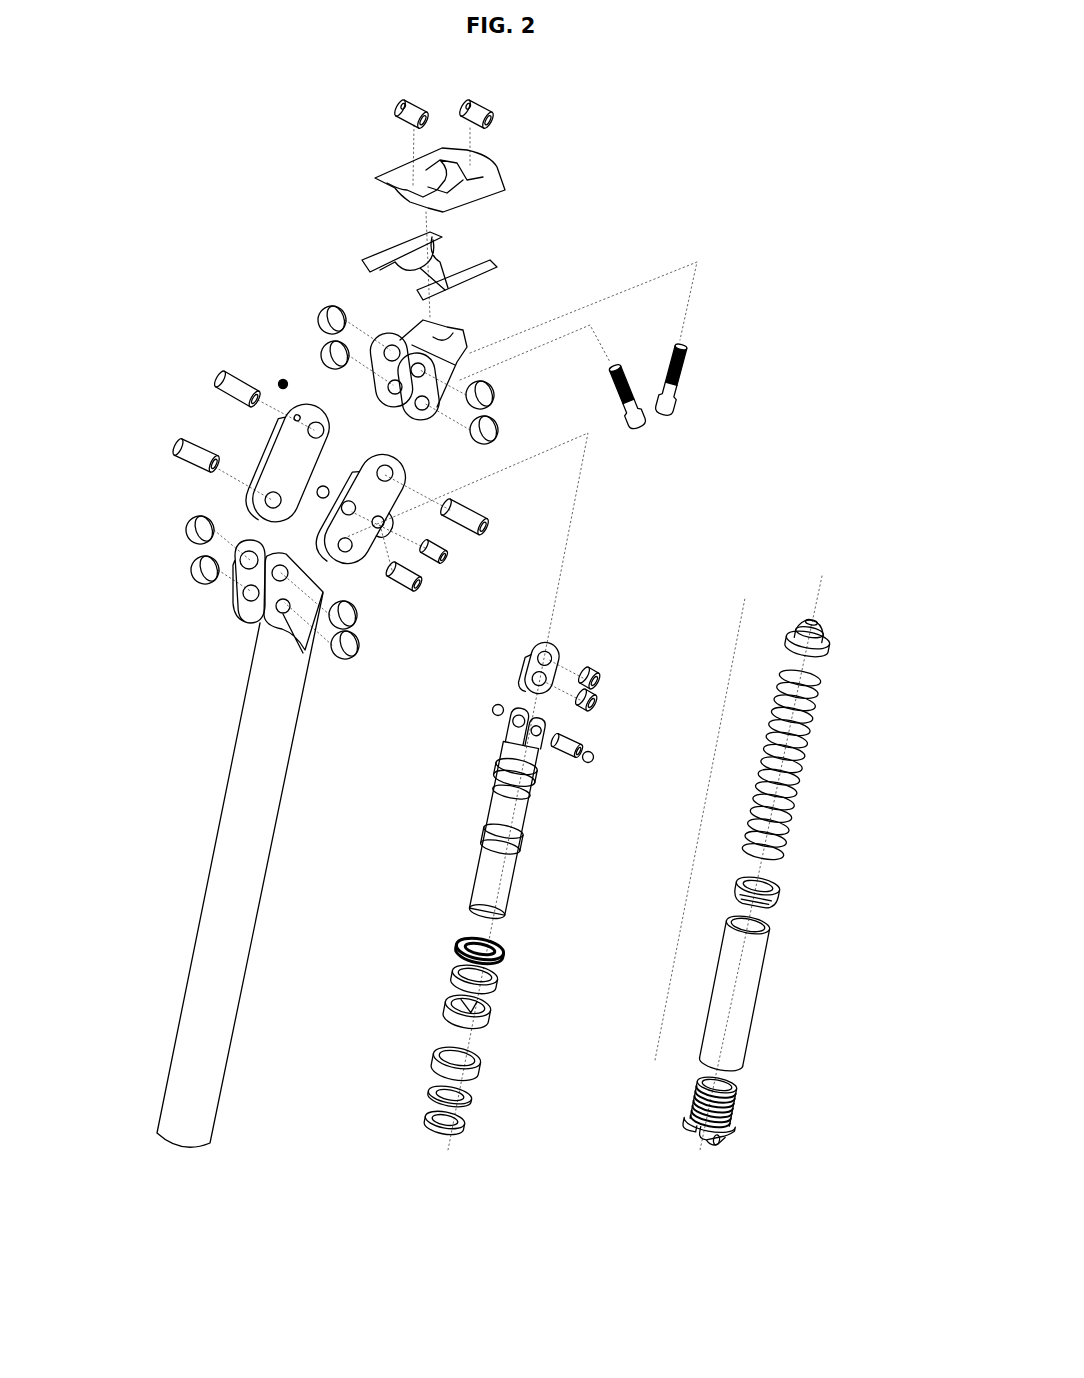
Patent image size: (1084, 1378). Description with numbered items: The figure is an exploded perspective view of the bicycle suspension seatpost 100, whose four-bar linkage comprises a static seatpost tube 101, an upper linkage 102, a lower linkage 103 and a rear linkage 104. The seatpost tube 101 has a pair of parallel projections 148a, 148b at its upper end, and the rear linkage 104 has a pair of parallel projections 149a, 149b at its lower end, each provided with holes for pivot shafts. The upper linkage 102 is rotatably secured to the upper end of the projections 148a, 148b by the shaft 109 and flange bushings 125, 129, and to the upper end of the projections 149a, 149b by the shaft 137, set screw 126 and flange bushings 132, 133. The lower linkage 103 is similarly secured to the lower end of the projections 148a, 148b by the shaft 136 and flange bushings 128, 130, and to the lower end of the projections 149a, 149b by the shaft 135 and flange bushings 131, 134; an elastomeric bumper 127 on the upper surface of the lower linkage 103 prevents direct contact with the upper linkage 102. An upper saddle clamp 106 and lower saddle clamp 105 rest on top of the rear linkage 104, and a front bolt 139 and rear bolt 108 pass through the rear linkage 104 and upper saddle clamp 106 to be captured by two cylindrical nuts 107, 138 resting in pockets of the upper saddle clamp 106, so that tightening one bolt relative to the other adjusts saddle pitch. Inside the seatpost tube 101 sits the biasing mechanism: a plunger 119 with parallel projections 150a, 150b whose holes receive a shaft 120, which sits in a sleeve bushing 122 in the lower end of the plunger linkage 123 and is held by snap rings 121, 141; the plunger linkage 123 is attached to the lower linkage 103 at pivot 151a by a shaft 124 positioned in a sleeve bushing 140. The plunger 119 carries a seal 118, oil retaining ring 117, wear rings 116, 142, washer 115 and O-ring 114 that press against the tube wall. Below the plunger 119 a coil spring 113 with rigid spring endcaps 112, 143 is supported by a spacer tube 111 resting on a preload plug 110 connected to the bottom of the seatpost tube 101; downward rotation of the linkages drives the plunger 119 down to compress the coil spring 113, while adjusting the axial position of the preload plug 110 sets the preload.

The bicycle suspension seatpost 100 is at (790, 157).
The seatpost tube 101 is at (218, 810).
The upper linkage 102 is at (238, 497).
The lower linkage 103 is at (402, 476).
The rear linkage 104 is at (465, 302).
The lower saddle clamp 105 is at (374, 245).
The upper saddle clamp 106 is at (374, 177).
The cylindrical nut 107 is at (497, 116).
The rear bolt 108 is at (685, 374).
The shaft 109 is at (162, 447).
The preload plug 110 is at (745, 1111).
The spacer tube 111 is at (765, 1006).
The spring endcap 112 is at (840, 650).
The coil spring 113 is at (812, 772).
The O-ring 114 is at (480, 1124).
The washer 115 is at (480, 1097).
The wear ring 116 is at (490, 1064).
The oil retaining ring 117 is at (505, 982).
The seal 118 is at (515, 947).
The plunger 119 is at (518, 869).
The shaft 120 is at (580, 748).
The snap ring 121 is at (493, 714).
The sleeve bushing 122 is at (602, 707).
The plunger linkage 123 is at (562, 650).
The shaft 124 is at (447, 553).
The flange bushing 125 is at (182, 527).
The set screw 126 is at (278, 380).
The elastomeric bumper 127 is at (327, 487).
The flange bushing 128 is at (187, 567).
The flange bushing 129 is at (360, 614).
The flange bushing 130 is at (362, 645).
The flange bushing 131 is at (318, 341).
The flange bushing 132 is at (318, 320).
The flange bushing 133 is at (497, 393).
The flange bushing 134 is at (502, 428).
The shaft 135 is at (490, 519).
The shaft 136 is at (422, 581).
The shaft 137 is at (208, 383).
The cylindrical nut 138 is at (390, 116).
The front bolt 139 is at (650, 426).
The sleeve bushing 140 is at (607, 683).
The snap ring 141 is at (590, 771).
The wear ring 142 is at (505, 1017).
The spring endcap 143 is at (785, 893).
The parallel projection 148a is at (238, 592).
The parallel projection 148b is at (250, 606).
The parallel projection 149a is at (416, 420).
The parallel projection 149b is at (380, 400).
The parallel projection 150a is at (546, 726).
The parallel projection 150b is at (518, 712).
The pivot 151a is at (392, 522).